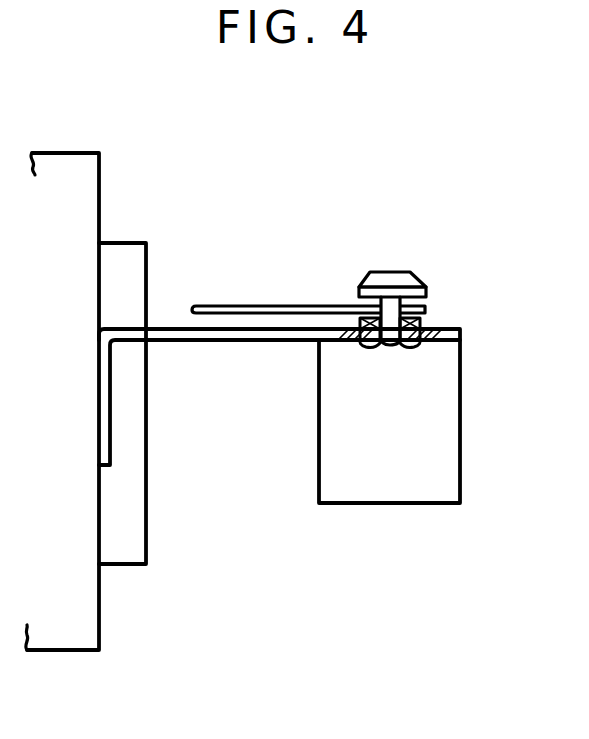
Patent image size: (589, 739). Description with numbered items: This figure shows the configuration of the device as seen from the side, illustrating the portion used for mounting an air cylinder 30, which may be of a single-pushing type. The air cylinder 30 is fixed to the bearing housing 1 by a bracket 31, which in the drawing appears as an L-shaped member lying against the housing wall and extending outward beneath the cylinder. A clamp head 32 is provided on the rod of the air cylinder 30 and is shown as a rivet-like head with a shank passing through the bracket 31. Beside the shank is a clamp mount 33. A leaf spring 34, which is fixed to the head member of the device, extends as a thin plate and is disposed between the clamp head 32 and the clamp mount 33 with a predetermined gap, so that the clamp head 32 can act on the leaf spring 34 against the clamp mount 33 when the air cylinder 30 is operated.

The bearing housing 1 is at (61, 162).
The air cylinder 30 is at (448, 445).
The bracket 31 is at (178, 335).
The clamp head 32 is at (397, 276).
The clamp mount 33 is at (430, 320).
The leaf spring 34 is at (258, 306).